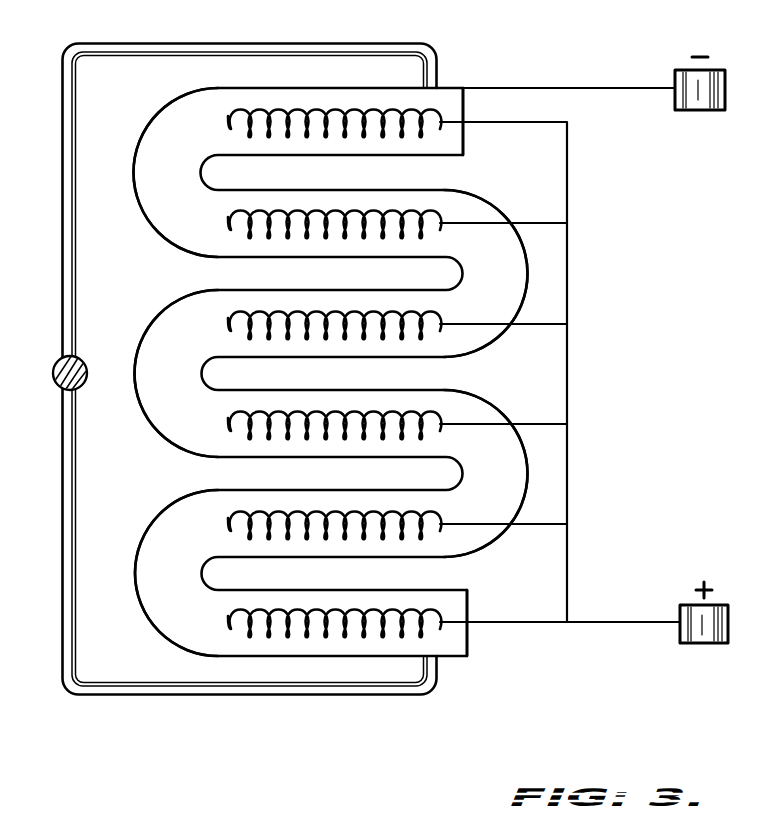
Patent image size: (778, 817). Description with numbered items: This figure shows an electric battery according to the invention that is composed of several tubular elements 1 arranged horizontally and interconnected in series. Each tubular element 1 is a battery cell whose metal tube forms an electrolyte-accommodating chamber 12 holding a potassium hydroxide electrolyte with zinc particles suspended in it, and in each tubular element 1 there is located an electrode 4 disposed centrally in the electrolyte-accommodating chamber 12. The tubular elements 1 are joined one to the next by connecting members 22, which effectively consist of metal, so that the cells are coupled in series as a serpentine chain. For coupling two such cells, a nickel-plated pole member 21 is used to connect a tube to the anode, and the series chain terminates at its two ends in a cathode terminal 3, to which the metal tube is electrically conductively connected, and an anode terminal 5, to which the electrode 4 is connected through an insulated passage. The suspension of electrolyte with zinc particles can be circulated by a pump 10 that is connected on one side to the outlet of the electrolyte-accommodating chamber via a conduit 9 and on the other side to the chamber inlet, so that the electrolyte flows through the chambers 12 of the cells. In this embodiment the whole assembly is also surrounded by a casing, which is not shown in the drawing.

The tubular element 1 is at (313, 78).
The cathode terminal 3 is at (698, 100).
The electrode 4 is at (272, 104).
The anode terminal 5 is at (700, 638).
The conduit 9 is at (70, 200).
The pump 10 is at (64, 378).
The electrolyte-accommodating chamber 12 is at (372, 100).
The pole member 21 is at (545, 324).
The connecting member 22 is at (134, 164).